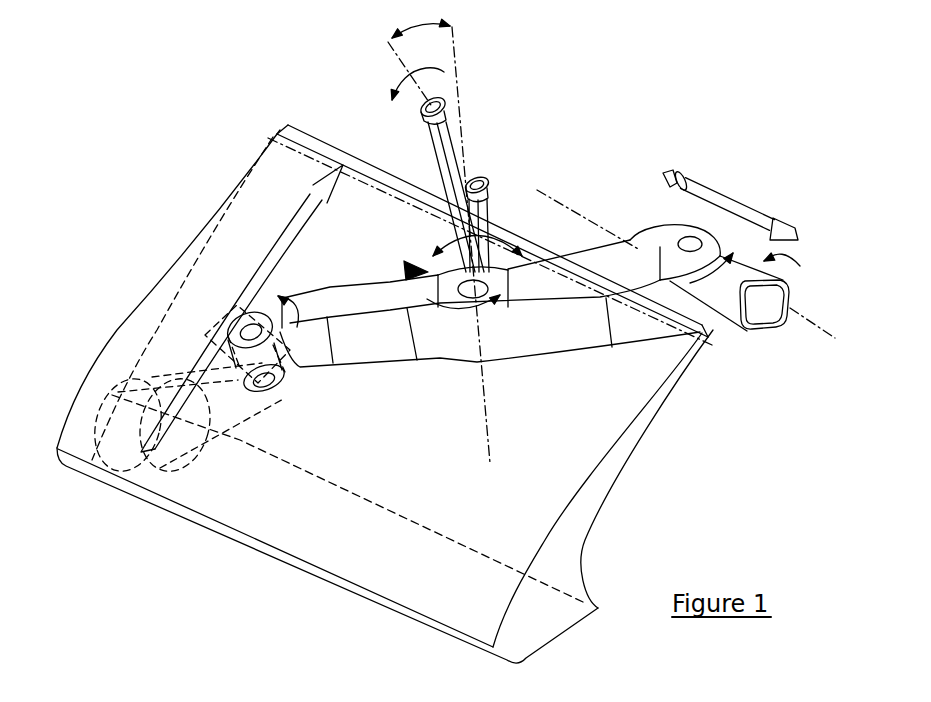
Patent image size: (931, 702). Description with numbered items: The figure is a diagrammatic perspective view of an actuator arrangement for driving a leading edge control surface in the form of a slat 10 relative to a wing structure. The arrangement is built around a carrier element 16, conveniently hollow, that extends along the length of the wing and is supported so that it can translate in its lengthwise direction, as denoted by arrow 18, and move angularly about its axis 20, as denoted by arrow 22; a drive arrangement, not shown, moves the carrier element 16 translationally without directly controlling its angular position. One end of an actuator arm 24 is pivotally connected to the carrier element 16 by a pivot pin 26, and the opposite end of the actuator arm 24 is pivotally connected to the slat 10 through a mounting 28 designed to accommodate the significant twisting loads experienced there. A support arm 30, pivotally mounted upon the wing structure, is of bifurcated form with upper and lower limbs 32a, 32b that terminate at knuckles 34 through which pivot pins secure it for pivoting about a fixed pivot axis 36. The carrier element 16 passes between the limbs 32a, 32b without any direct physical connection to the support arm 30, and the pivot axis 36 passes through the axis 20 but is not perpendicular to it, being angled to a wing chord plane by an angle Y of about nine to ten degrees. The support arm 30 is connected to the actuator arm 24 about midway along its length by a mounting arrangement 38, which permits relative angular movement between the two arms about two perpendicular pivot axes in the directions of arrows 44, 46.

The slat 10 is at (324, 549).
The carrier element 16 is at (733, 322).
The arrow 18 is at (737, 195).
The axis 20 is at (795, 325).
The arrow 22 is at (787, 247).
The actuator arm 24 is at (563, 340).
The pivot pin 26 is at (689, 238).
The mounting 28 is at (212, 450).
The support arm 30 is at (483, 231).
The upper limb 32a is at (442, 158).
The lower limb 32b is at (503, 213).
The knuckles 34 is at (457, 100).
The pivot axis 36 is at (398, 58).
The mounting arrangement 38 is at (404, 268).
The arrow 44 is at (443, 315).
The arrow 46 is at (523, 253).